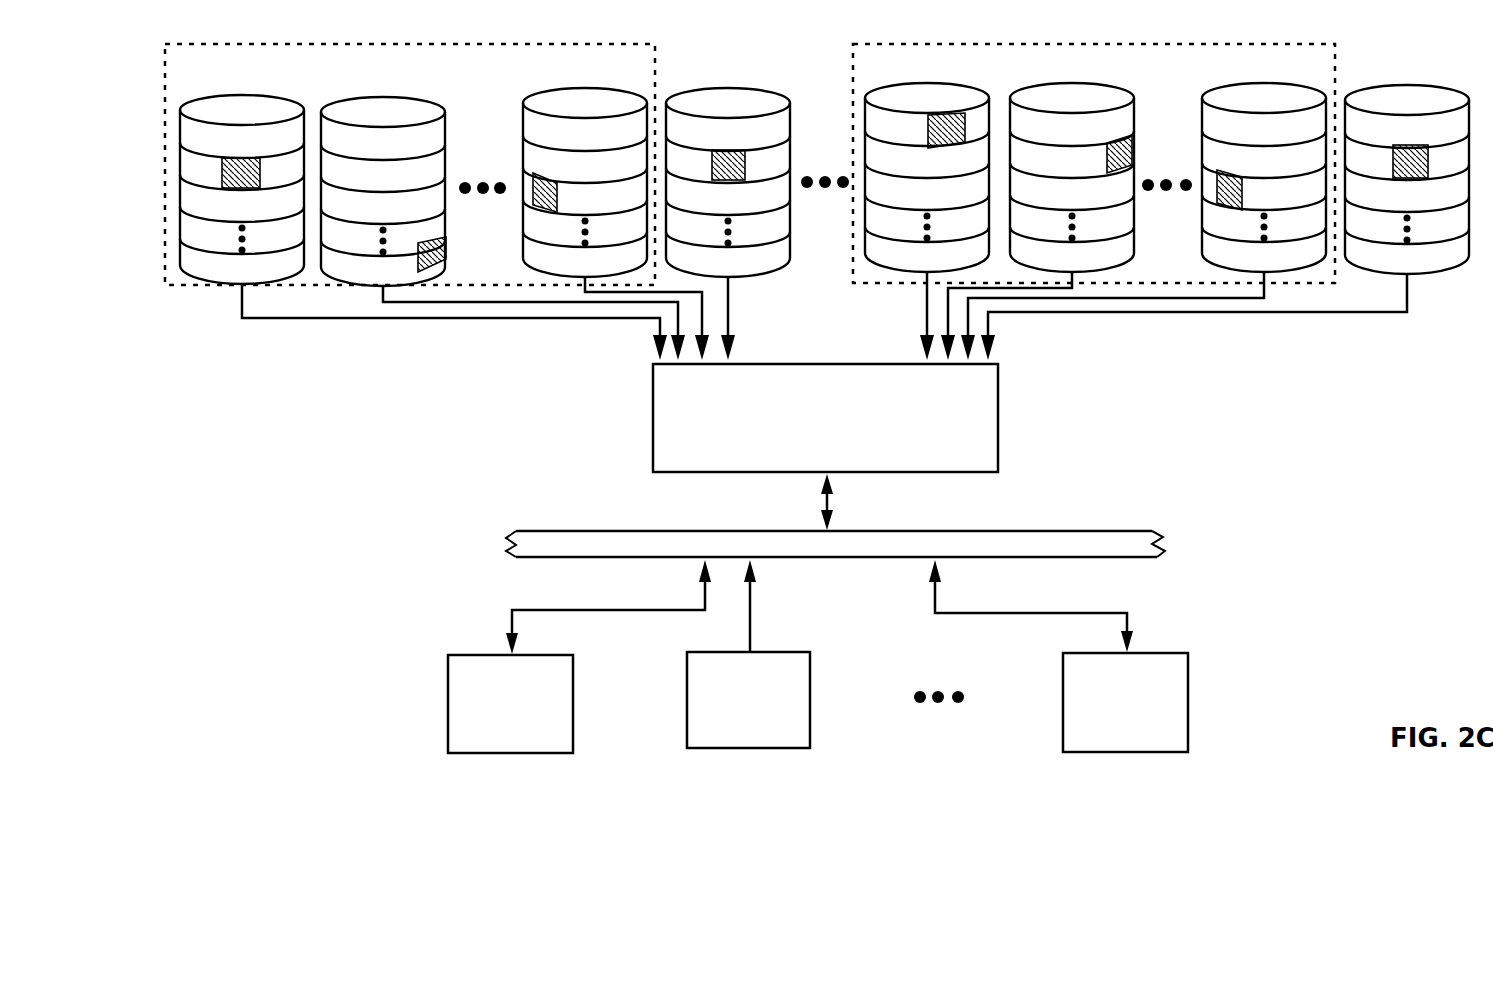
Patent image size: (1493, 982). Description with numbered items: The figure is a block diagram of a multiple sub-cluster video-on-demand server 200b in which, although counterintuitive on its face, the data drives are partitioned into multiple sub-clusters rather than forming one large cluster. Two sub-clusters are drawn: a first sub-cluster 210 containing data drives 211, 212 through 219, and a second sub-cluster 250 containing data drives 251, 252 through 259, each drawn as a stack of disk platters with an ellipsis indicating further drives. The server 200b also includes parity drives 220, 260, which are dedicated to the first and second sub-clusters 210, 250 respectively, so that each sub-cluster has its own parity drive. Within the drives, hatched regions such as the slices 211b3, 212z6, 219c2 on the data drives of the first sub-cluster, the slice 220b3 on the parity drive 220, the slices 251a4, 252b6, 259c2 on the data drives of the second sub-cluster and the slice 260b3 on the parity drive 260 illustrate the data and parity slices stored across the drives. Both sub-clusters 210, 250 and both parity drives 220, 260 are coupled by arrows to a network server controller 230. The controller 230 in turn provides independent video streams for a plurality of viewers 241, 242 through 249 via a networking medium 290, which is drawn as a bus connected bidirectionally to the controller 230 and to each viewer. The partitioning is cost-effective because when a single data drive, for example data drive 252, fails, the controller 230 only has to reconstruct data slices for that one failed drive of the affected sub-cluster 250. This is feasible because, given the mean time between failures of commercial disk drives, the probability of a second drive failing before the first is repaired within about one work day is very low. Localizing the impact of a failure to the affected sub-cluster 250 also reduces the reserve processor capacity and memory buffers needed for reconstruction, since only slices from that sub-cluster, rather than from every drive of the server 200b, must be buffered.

The video-on-demand server 200b is at (368, 550).
The first sub-cluster 210 is at (232, 80).
The data drive 211 is at (243, 95).
The data block b3 of storage device D1 211b3 is at (222, 173).
The data drive 212 is at (360, 97).
The data block z6 of storage device D2 212z6 is at (447, 250).
The data drive 219 is at (557, 88).
The data block c2 of storage device DN 219c2 is at (533, 185).
The parity drive 220 is at (720, 88).
The parity block b3 of parity device P1 220b3 is at (747, 153).
The second sub-cluster 250 is at (908, 79).
The data drive 251 is at (942, 84).
The data block a4 of storage device DN+1 251a4 is at (967, 126).
The data drive 252 is at (1080, 84).
The data block b6 of storage device DN+2 252b6 is at (1132, 138).
The data drive 259 is at (1262, 84).
The data block c2 of storage device D2N 259c2 is at (1217, 185).
The parity drive 260 is at (1412, 86).
The parity block b3 of parity device P2 260b3 is at (1393, 153).
The network server controller 230 is at (999, 432).
The networking medium 290 is at (1165, 542).
The viewer 241 is at (575, 690).
The viewer 242 is at (812, 688).
The viewer 249 is at (1190, 683).